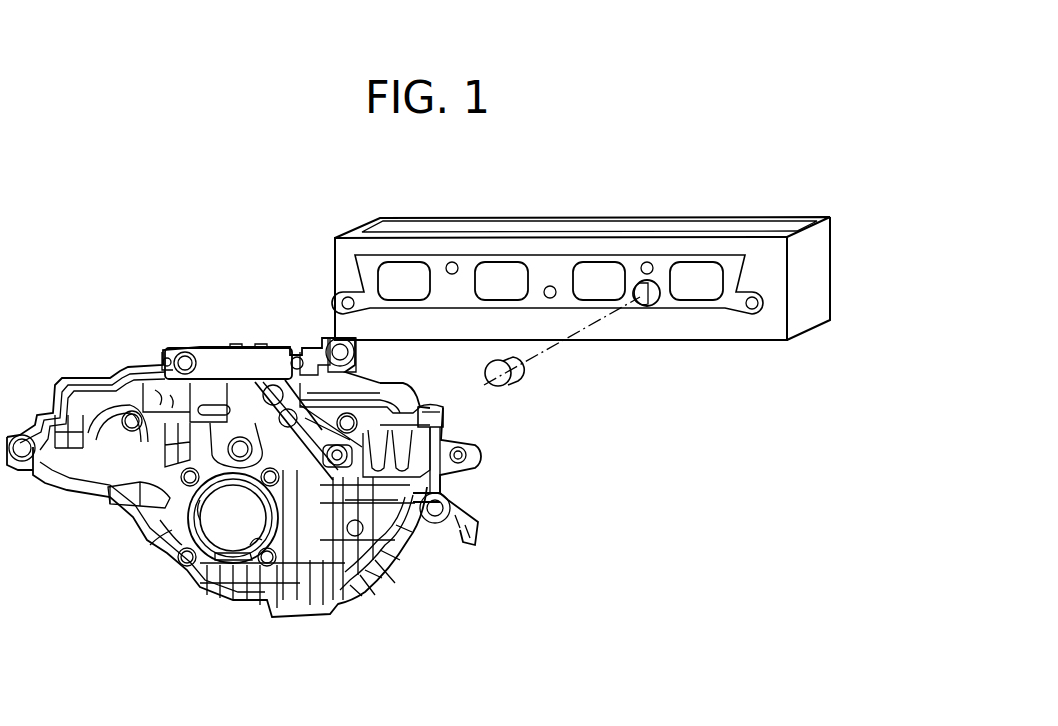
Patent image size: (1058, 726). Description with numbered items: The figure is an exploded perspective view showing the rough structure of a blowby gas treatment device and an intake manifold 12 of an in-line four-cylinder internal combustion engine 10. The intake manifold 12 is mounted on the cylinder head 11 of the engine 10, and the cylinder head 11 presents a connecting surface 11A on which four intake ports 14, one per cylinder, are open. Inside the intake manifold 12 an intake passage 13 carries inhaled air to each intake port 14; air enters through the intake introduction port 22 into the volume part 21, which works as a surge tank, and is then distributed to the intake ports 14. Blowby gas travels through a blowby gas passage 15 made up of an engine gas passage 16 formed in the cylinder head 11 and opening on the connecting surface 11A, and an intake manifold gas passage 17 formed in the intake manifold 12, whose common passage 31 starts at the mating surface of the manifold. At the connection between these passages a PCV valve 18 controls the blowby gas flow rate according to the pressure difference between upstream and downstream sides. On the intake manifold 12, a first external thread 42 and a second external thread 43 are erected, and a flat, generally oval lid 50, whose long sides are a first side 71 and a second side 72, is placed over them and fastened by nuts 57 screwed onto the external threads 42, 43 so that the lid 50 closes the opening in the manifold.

The internal combustion engine 10 is at (582, 254).
The cylinder head 11 is at (577, 218).
The connecting surface 11A is at (728, 260).
The intake manifold 12 is at (384, 578).
The intake passage 13 is at (164, 518).
The intake port 14 is at (405, 290).
The blowby gas passage 15 is at (657, 329).
The engine gas passage 16 is at (649, 308).
The intake manifold gas passage 17 is at (506, 430).
The PCV valve 18 is at (516, 377).
The volume part 21 is at (213, 530).
The intake introduction port 22 is at (228, 545).
The common passage 31 is at (450, 443).
The first external thread 42 is at (185, 353).
The second external thread 43 is at (295, 352).
The lid 50 is at (219, 338).
The nut 57 is at (167, 358).
The first side 71 is at (255, 383).
The second side 72 is at (245, 347).